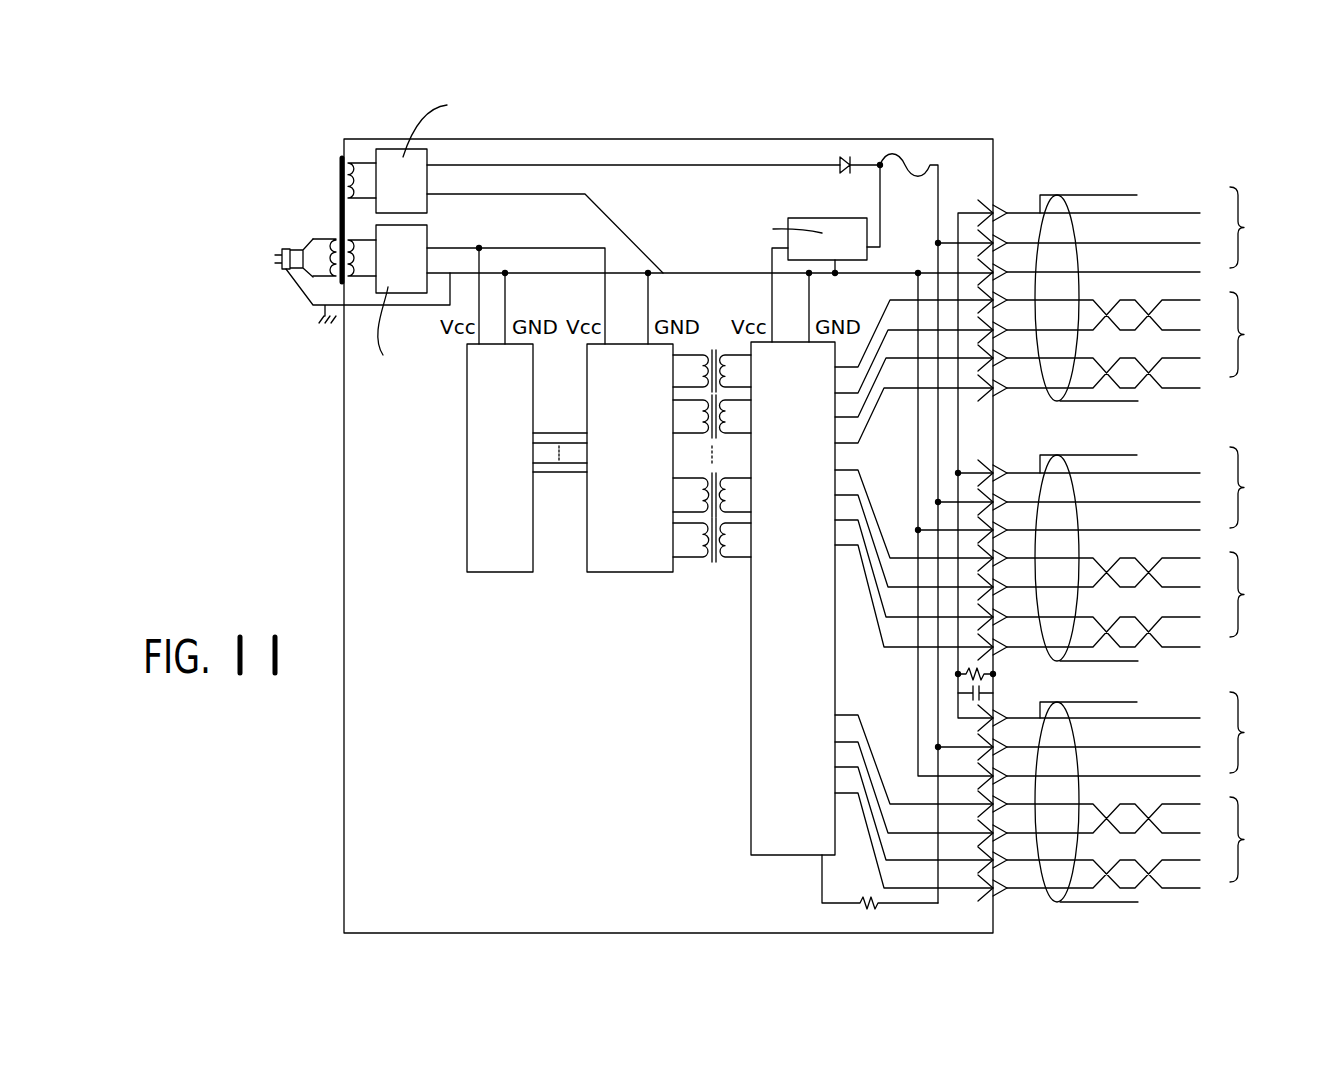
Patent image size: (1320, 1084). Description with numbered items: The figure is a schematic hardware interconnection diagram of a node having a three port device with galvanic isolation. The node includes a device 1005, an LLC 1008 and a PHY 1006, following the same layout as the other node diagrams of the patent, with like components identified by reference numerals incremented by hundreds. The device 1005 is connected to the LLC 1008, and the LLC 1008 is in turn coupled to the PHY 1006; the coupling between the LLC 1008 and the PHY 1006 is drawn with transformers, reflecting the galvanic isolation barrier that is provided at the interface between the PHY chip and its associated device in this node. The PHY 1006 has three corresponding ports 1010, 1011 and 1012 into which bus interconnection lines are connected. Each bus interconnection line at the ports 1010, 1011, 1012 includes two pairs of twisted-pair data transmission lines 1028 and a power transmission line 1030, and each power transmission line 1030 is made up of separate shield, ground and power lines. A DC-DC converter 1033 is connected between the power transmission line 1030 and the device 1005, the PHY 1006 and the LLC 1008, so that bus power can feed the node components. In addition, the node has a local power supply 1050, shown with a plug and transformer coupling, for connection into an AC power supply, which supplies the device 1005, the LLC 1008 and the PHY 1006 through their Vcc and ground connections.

The local power supply 1050 is at (361, 132).
The DC-DC converter 1033 is at (803, 217).
The device 1005 is at (497, 576).
The LLC 1008 is at (640, 576).
The PHY 1006 is at (757, 790).
The port 1010 is at (1071, 148).
The port 1011 is at (1146, 434).
The port 1012 is at (1061, 909).
The power transmission line 1030 is at (1154, 481).
The twisted-pair data transmission lines 1028 is at (1154, 582).